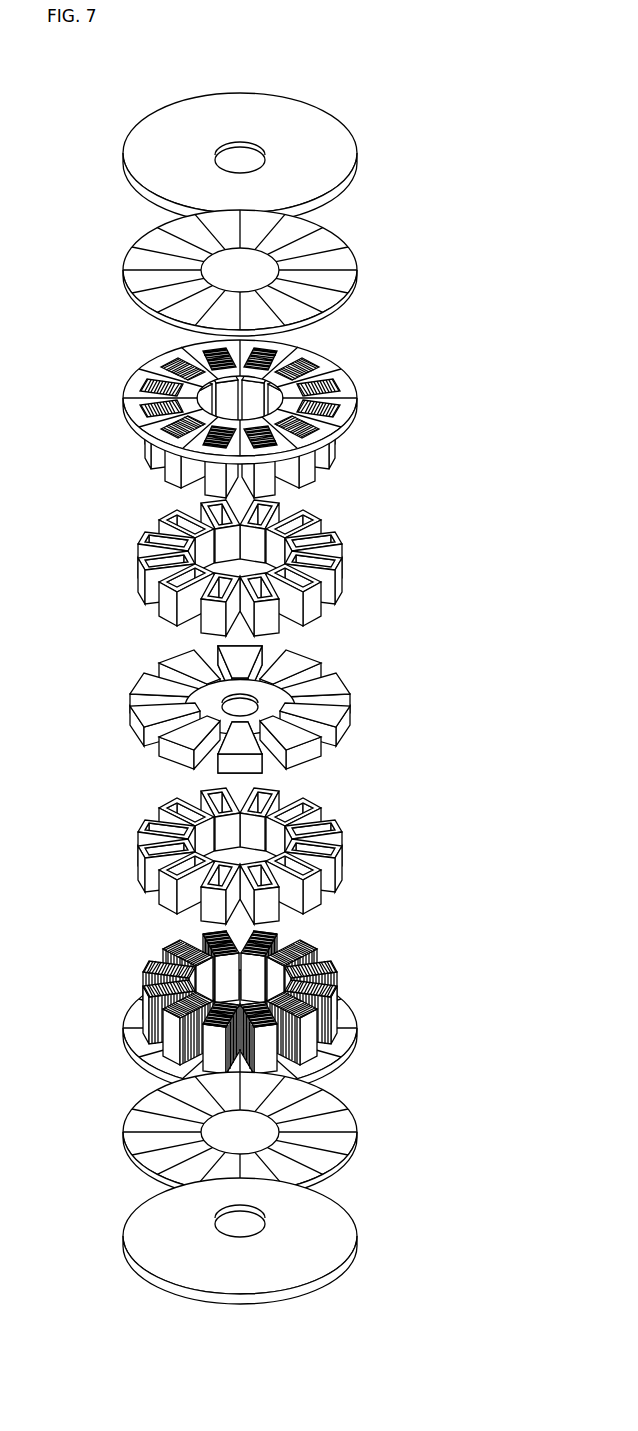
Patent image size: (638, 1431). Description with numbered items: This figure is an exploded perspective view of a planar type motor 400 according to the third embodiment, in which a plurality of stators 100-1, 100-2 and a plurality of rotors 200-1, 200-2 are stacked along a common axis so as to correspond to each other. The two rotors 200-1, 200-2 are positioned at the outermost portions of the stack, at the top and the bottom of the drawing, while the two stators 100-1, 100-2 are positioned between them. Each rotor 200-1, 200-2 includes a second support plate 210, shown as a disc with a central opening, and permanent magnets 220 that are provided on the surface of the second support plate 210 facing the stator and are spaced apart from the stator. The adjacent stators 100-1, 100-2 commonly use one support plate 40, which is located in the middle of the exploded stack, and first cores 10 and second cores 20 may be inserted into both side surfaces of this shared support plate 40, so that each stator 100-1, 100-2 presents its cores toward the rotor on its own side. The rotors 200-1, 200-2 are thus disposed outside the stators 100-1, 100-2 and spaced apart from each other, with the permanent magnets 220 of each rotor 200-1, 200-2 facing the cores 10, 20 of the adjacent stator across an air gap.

The planar type motor 400 is at (381, 78).
The rotor 200-1 is at (395, 133).
The rotor 200-2 is at (395, 1095).
The second support plate 210 is at (127, 135).
The permanent magnets 220 is at (125, 245).
The stator 100-1 is at (395, 387).
The stator 100-2 is at (395, 720).
The first cores 10 is at (135, 404).
The second cores 20 is at (131, 427).
The support plate 40 is at (142, 668).